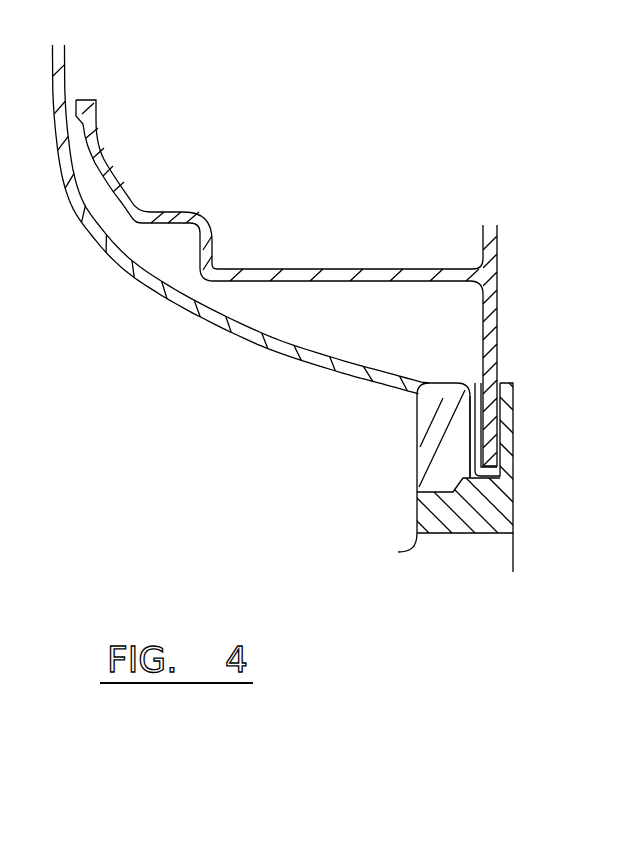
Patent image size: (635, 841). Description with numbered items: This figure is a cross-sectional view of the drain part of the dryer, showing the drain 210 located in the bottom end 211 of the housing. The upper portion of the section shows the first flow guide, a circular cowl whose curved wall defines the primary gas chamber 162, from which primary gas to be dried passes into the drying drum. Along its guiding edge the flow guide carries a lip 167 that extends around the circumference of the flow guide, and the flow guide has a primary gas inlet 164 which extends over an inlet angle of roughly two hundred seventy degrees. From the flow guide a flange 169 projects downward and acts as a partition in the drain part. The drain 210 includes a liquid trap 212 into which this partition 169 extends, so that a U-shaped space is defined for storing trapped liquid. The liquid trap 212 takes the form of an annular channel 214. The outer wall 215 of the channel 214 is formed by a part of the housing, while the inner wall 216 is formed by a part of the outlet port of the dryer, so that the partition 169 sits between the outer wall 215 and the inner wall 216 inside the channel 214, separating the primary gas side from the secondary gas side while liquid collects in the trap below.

The primary gas chamber 162 is at (358, 188).
The primary gas inlet 164 is at (366, 328).
The lip 167 is at (95, 108).
The flange 169 is at (497, 335).
The drain 210 is at (584, 580).
The bottom end 211 is at (405, 431).
The liquid trap 212 is at (477, 440).
The annular channel 214 is at (466, 378).
The outer wall 215 is at (433, 442).
The inner wall 216 is at (514, 410).